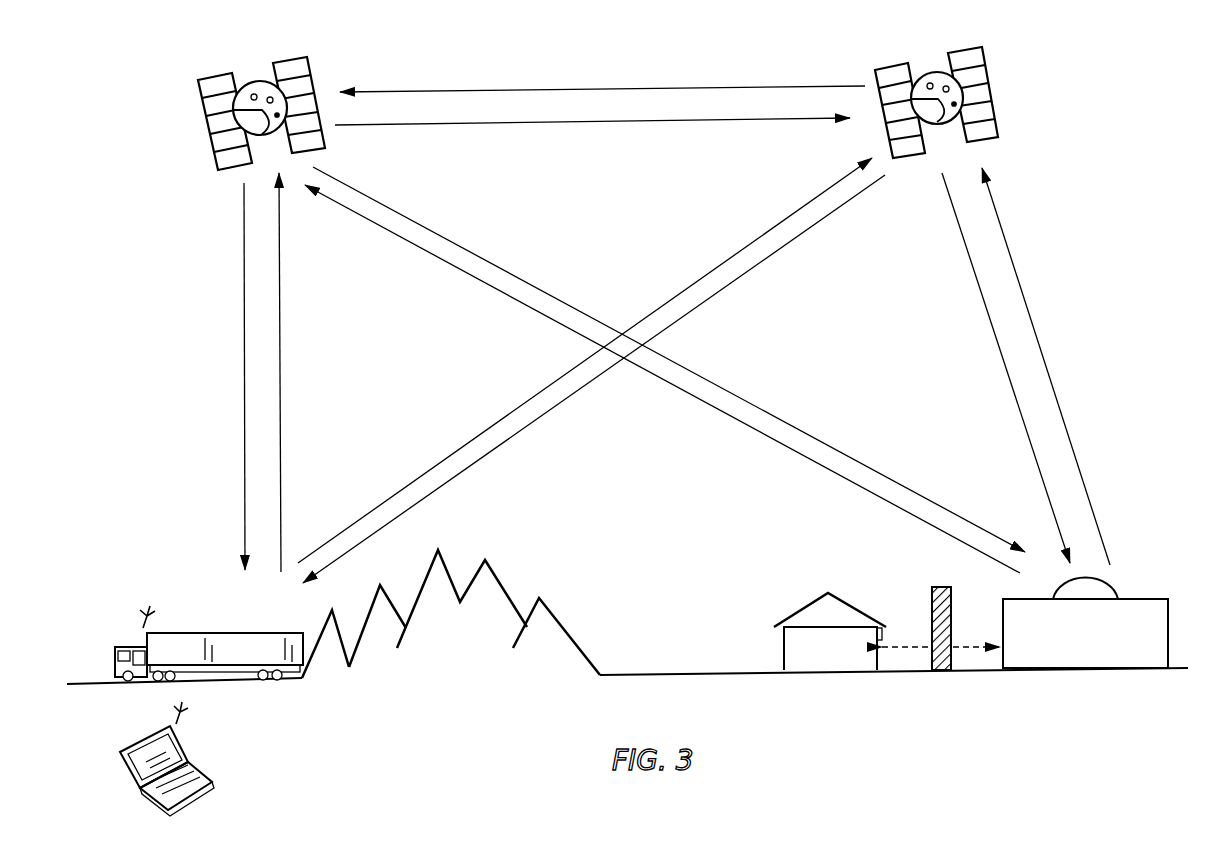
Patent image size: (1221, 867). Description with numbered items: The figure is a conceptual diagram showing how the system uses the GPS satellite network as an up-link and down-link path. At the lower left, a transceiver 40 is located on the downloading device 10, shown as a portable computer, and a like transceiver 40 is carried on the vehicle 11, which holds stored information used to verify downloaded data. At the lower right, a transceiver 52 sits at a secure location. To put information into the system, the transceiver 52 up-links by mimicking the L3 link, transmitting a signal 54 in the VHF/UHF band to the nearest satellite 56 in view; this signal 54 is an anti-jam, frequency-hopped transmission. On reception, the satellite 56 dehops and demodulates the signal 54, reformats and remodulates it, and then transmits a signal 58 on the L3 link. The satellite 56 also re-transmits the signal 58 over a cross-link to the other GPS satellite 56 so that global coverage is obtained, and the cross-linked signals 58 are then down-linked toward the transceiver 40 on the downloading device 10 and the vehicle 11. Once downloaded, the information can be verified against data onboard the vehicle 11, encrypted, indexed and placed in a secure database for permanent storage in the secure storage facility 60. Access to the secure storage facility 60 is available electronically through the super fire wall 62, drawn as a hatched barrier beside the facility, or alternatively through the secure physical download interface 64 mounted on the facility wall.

The downloading device 10 is at (138, 732).
The vehicle 11 is at (220, 660).
The transceiver 40 is at (143, 626).
The transceiver 52 is at (1130, 608).
The signal 54 is at (860, 490).
The GPS satellite 56 is at (217, 136).
The signal 58 is at (662, 120).
The secure storage facility 60 is at (830, 631).
The super fire wall 62 is at (952, 632).
The secure physical download interface 64 is at (882, 633).